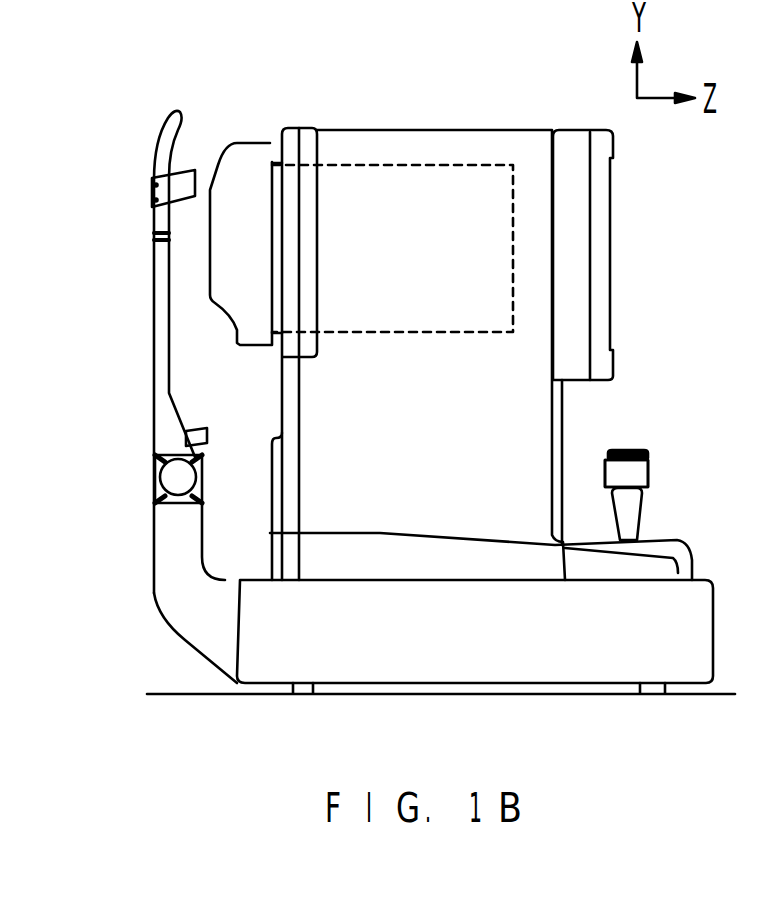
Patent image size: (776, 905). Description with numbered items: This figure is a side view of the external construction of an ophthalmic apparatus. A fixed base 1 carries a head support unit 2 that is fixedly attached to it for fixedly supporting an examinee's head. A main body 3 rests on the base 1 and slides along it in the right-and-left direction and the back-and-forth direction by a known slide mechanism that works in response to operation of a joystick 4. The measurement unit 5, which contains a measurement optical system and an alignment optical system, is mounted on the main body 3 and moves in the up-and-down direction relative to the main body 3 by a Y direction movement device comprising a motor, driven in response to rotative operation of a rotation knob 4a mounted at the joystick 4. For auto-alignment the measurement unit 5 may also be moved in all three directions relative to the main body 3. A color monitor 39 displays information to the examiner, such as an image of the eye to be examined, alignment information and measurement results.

The fixed base 1 is at (463, 663).
The head support unit 2 is at (170, 437).
The main body 3 is at (537, 447).
The joystick 4 is at (630, 450).
The rotation knob 4a is at (632, 472).
The measurement unit 5 is at (445, 163).
The color monitor 39 is at (612, 233).